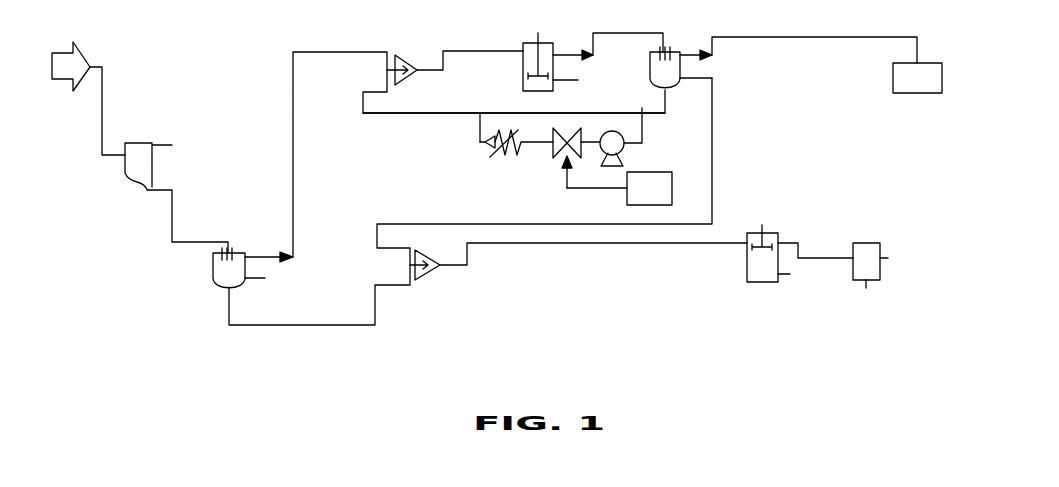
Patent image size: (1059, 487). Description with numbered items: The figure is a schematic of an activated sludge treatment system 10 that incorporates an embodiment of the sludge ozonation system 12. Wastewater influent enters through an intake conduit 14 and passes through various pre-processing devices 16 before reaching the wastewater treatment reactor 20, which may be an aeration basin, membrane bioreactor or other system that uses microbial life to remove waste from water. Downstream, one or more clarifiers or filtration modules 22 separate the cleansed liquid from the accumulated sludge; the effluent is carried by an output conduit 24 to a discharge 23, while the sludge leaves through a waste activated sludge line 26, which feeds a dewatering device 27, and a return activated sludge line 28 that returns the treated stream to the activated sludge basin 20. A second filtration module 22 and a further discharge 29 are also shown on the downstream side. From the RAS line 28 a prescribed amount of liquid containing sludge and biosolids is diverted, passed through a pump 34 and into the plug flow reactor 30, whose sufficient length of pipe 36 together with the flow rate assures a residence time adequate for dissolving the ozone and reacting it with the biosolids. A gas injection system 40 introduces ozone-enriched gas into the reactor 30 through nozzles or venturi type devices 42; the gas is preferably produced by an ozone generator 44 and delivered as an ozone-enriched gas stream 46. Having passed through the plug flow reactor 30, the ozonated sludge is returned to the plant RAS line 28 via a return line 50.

The activated sludge treatment system 10 is at (112, 284).
The sludge ozonation system 12 is at (480, 169).
The intake conduit 14 is at (101, 105).
The pre-processing devices 16 is at (132, 181).
The wastewater treatment reactor 20 is at (545, 44).
The clarifiers or filtration modules 22 is at (213, 290).
The discharge 23 is at (930, 62).
The output conduit 24 is at (797, 38).
The waste activated sludge line 26 is at (714, 170).
The dewatering device 27 is at (747, 270).
The return activated sludge line 28 is at (609, 112).
The second outlet device 29 is at (872, 248).
The plug flow reactor 30 is at (537, 170).
The pump 34 is at (618, 131).
The pipe 36 is at (480, 137).
The gas injection system 40 is at (648, 160).
The nozzles or venturi type devices 42 is at (562, 128).
The ozone generator 44 is at (627, 199).
The ozone-enriched gas stream 46 is at (575, 191).
The return line 50 is at (478, 118).